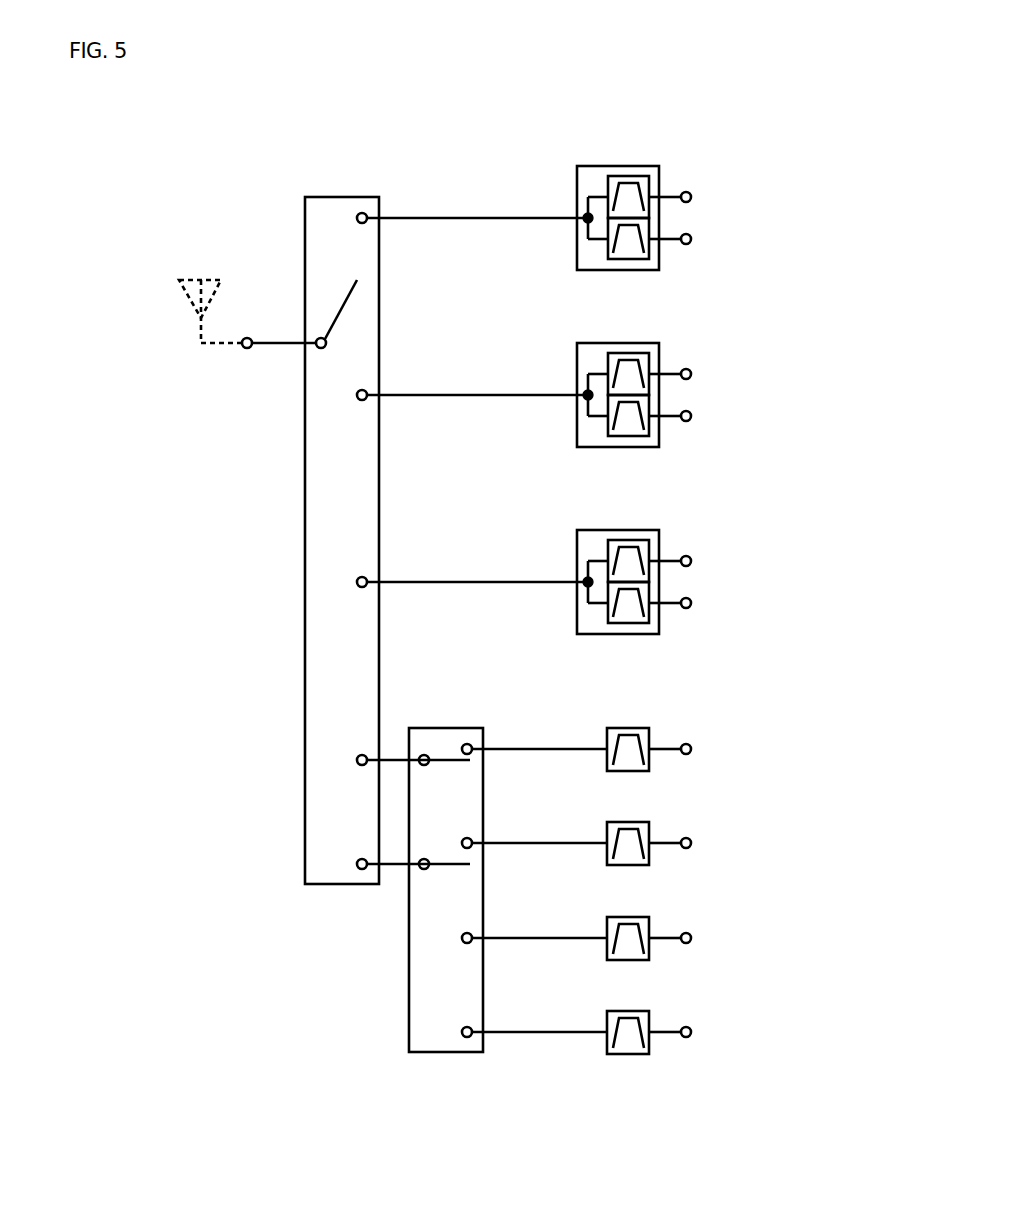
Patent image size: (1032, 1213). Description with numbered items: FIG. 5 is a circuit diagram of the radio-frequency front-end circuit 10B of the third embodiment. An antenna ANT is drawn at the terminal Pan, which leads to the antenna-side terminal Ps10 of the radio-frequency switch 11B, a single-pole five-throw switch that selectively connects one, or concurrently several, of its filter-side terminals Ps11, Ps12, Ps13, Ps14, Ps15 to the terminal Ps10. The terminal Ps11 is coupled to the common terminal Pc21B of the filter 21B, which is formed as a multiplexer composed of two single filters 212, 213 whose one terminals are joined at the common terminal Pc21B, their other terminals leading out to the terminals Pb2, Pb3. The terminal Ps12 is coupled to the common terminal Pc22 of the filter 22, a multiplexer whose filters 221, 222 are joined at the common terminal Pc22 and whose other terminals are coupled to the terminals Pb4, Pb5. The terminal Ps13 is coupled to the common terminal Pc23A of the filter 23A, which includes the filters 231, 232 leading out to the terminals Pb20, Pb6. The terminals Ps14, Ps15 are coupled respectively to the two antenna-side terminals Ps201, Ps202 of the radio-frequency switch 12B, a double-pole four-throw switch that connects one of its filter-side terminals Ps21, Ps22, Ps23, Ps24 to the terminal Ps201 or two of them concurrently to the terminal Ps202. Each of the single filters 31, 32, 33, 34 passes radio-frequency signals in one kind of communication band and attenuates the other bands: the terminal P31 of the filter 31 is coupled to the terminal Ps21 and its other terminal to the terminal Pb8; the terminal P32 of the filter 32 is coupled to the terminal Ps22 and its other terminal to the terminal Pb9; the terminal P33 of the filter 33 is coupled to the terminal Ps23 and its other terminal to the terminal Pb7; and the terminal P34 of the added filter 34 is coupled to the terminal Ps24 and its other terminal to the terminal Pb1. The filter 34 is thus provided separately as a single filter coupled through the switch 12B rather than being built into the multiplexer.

The radio-frequency front-end circuit 10B is at (697, 93).
The radio-frequency switch 11B is at (348, 197).
The radio-frequency switch 12B is at (452, 728).
The antenna ANT is at (218, 272).
The terminal Pan is at (243, 349).
The antenna-side terminal Ps10 is at (317, 338).
The filter-side terminal Ps11 is at (366, 223).
The filter-side terminal Ps12 is at (366, 400).
The filter-side terminal Ps13 is at (366, 587).
The filter-side terminal Ps14 is at (357, 757).
The filter-side terminal Ps15 is at (357, 861).
The antenna-side terminal Ps201 is at (424, 754).
The antenna-side terminal Ps202 is at (421, 868).
The filter-side terminal Ps21 is at (471, 745).
The filter-side terminal Ps22 is at (471, 839).
The filter-side terminal Ps23 is at (471, 934).
The filter-side terminal Ps24 is at (471, 1028).
The filter 21B is at (612, 208).
The filter 212 is at (650, 182).
The filter 213 is at (650, 258).
The common terminal Pc21B is at (585, 221).
The filter 22 is at (618, 385).
The filter 221 is at (650, 360).
The filter 222 is at (650, 435).
The common terminal Pc22 is at (585, 398).
The filter 23A is at (612, 574).
The filter 231 is at (650, 548).
The filter 232 is at (650, 623).
The common terminal Pc23A is at (585, 585).
The filter 31 is at (632, 728).
The filter 32 is at (632, 822).
The filter 33 is at (632, 917).
The filter 34 is at (632, 1011).
The terminal P31 is at (605, 752).
The terminal P32 is at (605, 846).
The terminal P33 is at (605, 941).
The terminal P34 is at (605, 1035).
The terminal Pb1 is at (692, 1032).
The terminal Pb2 is at (692, 197).
The terminal Pb3 is at (692, 239).
The terminal Pb4 is at (692, 374).
The terminal Pb5 is at (692, 416).
The terminal Pb6 is at (692, 603).
The terminal Pb7 is at (692, 938).
The terminal Pb8 is at (692, 749).
The terminal Pb9 is at (692, 843).
The terminal Pb20 is at (692, 561).